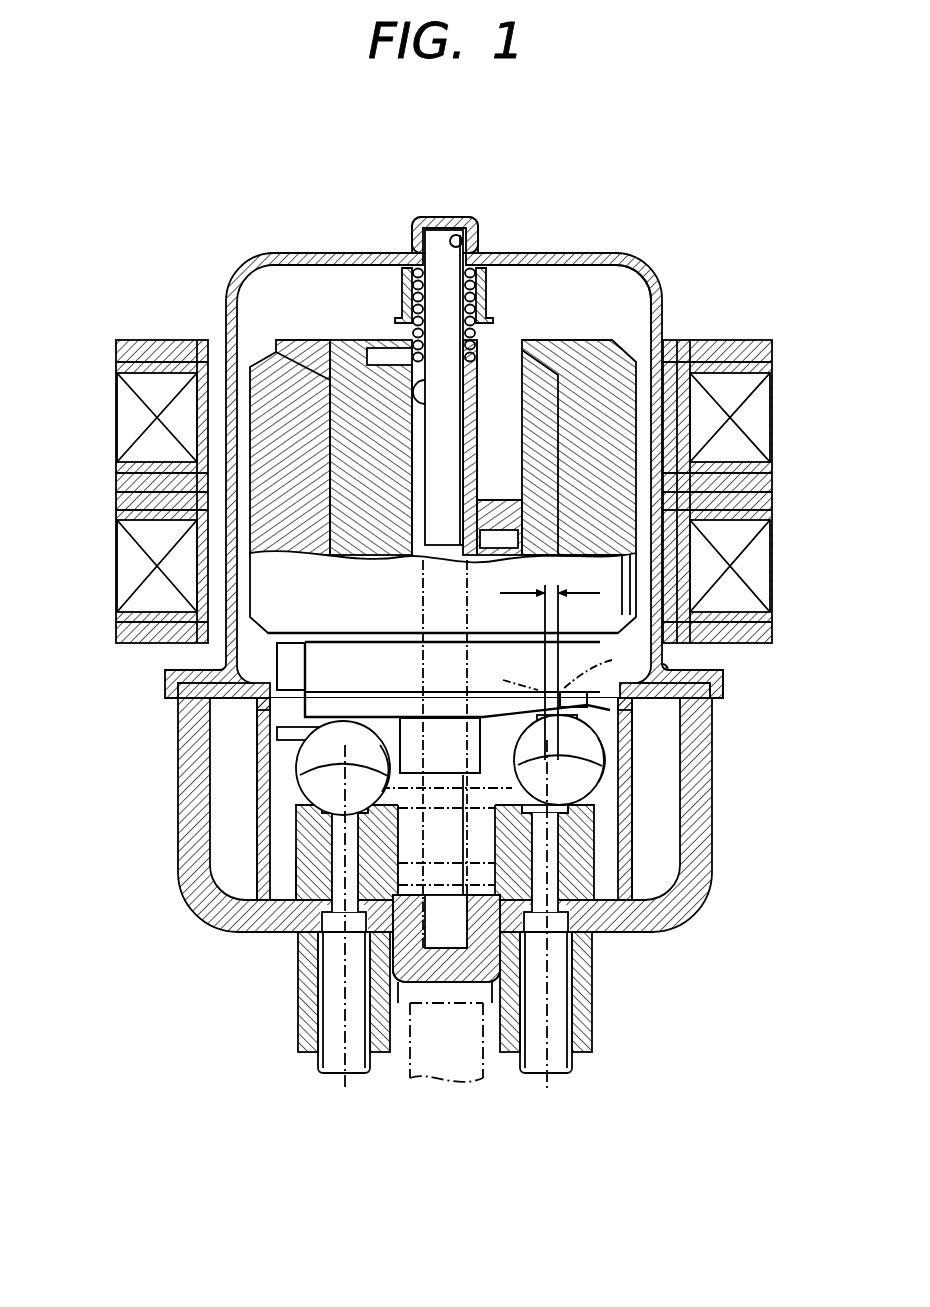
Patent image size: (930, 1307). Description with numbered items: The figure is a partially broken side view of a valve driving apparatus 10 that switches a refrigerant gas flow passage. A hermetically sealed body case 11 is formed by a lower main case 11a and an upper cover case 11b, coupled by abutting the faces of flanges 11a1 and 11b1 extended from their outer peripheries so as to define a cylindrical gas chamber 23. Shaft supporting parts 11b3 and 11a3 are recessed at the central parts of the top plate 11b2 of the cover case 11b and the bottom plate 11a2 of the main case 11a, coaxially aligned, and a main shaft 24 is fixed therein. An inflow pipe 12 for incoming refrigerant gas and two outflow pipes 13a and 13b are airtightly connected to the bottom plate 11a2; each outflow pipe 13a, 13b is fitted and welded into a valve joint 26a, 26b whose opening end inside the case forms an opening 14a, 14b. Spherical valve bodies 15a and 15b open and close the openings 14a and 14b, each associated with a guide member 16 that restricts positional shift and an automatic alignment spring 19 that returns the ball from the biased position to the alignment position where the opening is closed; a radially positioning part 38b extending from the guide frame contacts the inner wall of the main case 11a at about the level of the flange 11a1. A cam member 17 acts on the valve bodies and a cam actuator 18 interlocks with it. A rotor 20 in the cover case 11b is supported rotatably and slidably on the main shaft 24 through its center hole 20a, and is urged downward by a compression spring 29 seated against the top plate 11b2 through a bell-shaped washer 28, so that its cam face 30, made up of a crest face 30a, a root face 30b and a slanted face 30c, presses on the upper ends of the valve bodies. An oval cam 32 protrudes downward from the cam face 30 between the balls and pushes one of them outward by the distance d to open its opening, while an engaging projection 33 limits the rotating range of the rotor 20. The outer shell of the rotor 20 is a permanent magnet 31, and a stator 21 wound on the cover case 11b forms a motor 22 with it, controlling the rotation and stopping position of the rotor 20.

The valve driving apparatus 10 is at (217, 258).
The body case 11 is at (172, 880).
The main case 11a is at (705, 858).
The flange of main case 11a1 is at (722, 705).
The bottom plate of main case 11a2 is at (602, 937).
The shaft supporting part 11a3 is at (452, 925).
The cover case 11b is at (663, 310).
The flange of cover case 11b1 is at (716, 672).
The top plate of cover case 11b2 is at (548, 307).
The shaft supporting part 11b3 is at (458, 238).
The inflow pipe 12 is at (410, 1052).
The outflow pipe 13a is at (320, 1062).
The outflow pipe 13b is at (590, 1062).
The opening 14a is at (300, 828).
The opening 14b is at (600, 826).
The spherical valve body 15a is at (322, 810).
The spherical valve body 15b is at (593, 795).
The guide member 16 is at (418, 724).
The cam member 17 is at (280, 855).
The cam actuator 18 is at (605, 897).
The automatic alignment spring 19 is at (335, 715).
The rotor 20 is at (260, 570).
The center hole of rotor 20a is at (432, 397).
The stator 21 is at (728, 372).
The motor 22 is at (205, 325).
The gas chamber 23 is at (598, 258).
The main shaft 24 is at (360, 415).
The valve joint 26a is at (298, 1025).
The valve joint 26b is at (595, 1030).
The bell-shaped washer 28 is at (488, 295).
The compression spring 29 is at (402, 295).
The cam face 30 is at (335, 790).
The crest face 30a is at (345, 735).
The root face 30b is at (580, 738).
The slanted face 30c is at (553, 792).
The permanent magnet 31 is at (678, 355).
The oval cam 32 is at (535, 905).
The engaging projection 33 is at (275, 658).
The radially positioning part 38b is at (265, 700).